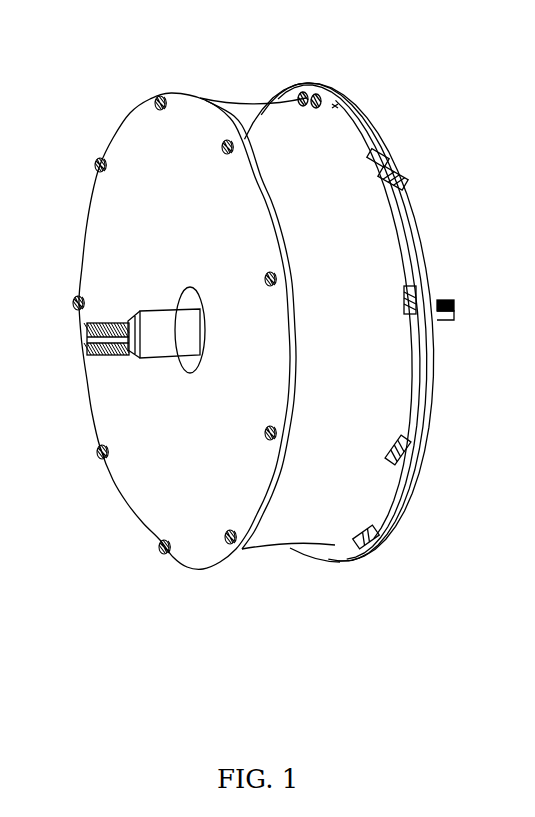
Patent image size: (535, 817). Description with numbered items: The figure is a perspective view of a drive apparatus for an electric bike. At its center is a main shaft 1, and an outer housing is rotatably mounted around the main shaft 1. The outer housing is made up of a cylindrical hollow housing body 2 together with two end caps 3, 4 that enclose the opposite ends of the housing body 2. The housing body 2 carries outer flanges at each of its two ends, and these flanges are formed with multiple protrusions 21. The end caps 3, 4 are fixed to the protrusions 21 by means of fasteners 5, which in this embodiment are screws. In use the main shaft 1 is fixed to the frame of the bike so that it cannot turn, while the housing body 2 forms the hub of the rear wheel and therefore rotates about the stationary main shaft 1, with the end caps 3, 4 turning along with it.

The main shaft 1 is at (157, 340).
The housing body 2 is at (323, 507).
The end cap 3 is at (167, 145).
The end cap 4 is at (408, 215).
The fasteners 5 is at (97, 166).
The protrusions 21 is at (363, 110).